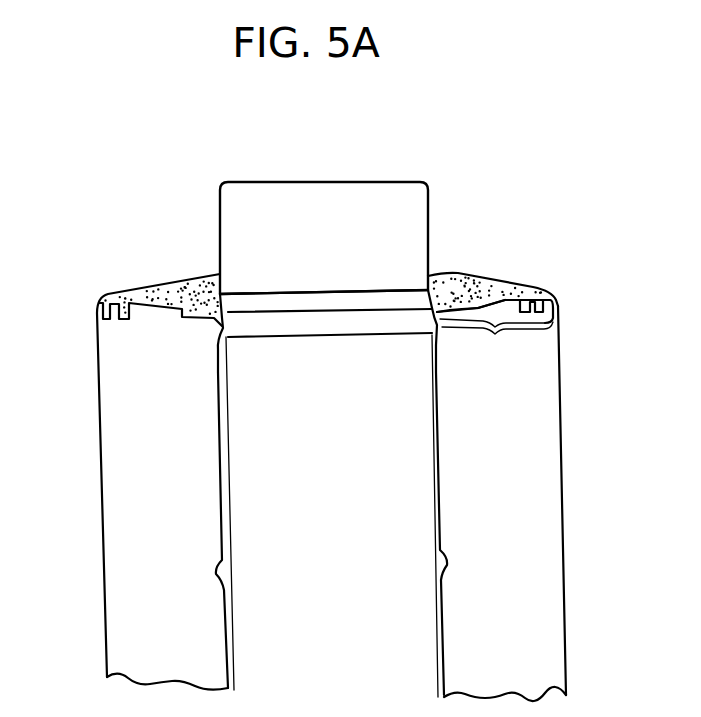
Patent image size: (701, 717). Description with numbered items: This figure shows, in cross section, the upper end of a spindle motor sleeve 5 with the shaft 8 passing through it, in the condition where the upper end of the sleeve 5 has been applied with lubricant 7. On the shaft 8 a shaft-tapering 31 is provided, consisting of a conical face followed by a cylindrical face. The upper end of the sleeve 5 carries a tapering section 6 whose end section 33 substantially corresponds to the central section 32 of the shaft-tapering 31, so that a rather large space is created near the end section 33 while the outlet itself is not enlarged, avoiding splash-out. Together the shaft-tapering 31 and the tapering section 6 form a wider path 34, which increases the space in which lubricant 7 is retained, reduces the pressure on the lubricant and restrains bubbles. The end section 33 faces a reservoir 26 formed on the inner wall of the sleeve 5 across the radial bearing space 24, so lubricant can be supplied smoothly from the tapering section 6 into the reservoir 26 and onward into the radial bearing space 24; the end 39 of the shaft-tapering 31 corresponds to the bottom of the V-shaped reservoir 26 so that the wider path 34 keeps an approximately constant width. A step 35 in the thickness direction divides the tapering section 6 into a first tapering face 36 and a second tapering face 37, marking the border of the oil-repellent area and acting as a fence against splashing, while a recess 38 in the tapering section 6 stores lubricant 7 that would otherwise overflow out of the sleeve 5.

The sleeve 5 is at (548, 588).
The tapering section 6 is at (440, 328).
The lubricant 7 is at (153, 285).
The shaft 8 is at (378, 197).
The radial bearing space 24 is at (226, 612).
The reservoir 26 is at (216, 572).
The shaft-tapering 31 is at (315, 298).
The central section 32 is at (287, 312).
The end section 33 is at (442, 308).
The wider path 34 is at (213, 320).
The step 35 is at (468, 308).
The first tapering face 36 is at (450, 308).
The second tapering face 37 is at (497, 300).
The recess 38 is at (552, 297).
The end 39 is at (287, 335).